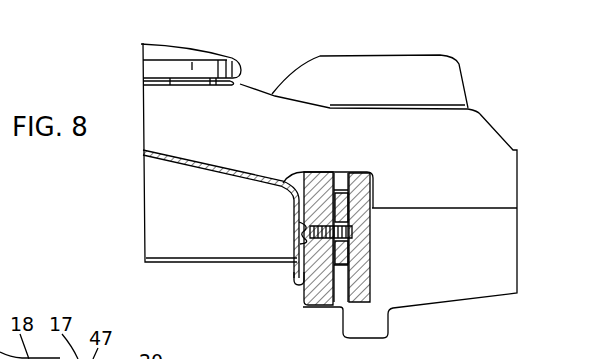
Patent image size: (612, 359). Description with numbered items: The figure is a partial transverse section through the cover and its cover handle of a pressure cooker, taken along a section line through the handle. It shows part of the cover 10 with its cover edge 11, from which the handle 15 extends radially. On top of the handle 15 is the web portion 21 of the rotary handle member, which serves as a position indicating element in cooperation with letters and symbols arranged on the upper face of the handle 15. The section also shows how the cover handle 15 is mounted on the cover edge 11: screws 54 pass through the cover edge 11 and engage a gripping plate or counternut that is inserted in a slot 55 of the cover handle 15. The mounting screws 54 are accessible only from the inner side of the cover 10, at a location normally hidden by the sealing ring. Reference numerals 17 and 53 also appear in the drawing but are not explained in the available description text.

The cover 10 is at (225, 170).
The cover edge 11 is at (296, 272).
The handle 15 is at (466, 284).
The cap 17 is at (190, 50).
The web portion 21 is at (431, 66).
The insert piece 53 is at (347, 198).
The screws 54 is at (300, 238).
The slot 55 is at (343, 305).